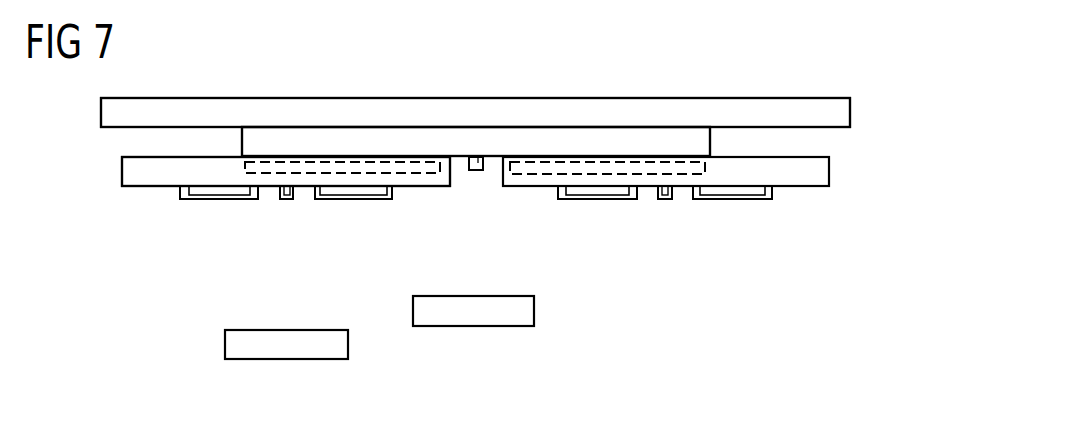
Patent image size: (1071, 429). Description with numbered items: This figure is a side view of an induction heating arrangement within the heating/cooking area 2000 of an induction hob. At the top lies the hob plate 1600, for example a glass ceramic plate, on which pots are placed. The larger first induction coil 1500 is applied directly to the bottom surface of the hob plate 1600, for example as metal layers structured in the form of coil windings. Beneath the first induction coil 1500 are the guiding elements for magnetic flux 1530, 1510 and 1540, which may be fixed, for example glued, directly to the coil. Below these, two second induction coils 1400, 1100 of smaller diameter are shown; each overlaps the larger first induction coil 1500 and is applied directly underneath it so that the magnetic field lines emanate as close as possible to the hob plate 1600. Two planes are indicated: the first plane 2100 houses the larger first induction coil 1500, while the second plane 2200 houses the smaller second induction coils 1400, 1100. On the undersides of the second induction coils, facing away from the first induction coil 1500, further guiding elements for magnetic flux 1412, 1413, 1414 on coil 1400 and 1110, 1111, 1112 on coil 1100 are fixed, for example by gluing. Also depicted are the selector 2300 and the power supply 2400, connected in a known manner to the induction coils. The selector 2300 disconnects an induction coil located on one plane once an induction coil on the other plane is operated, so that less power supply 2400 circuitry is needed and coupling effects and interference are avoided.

The heating/cooking area 2000 is at (750, 98).
The hob plate 1600 is at (851, 113).
The first induction coil 1500 is at (712, 137).
The first plane 2100 is at (130, 139).
The second plane 2200 is at (102, 169).
The second induction coil 1400 is at (140, 172).
The second induction coil 1100 is at (829, 170).
The guiding element for magnetic flux 1530 is at (408, 174).
The guiding element for magnetic flux 1510 is at (548, 174).
The guiding element for magnetic flux 1540 is at (479, 170).
The guiding element for magnetic flux 1412 is at (220, 199).
The guiding element for magnetic flux 1413 is at (288, 199).
The guiding element for magnetic flux 1414 is at (345, 199).
The guiding element for magnetic flux 1110 is at (602, 199).
The guiding element for magnetic flux 1111 is at (667, 199).
The guiding element for magnetic flux 1112 is at (730, 199).
The selector 2300 is at (535, 309).
The power supply 2400 is at (223, 345).